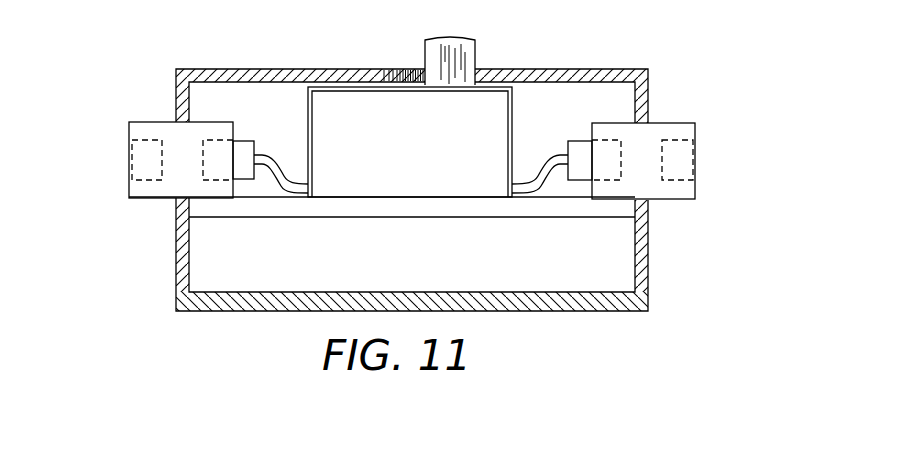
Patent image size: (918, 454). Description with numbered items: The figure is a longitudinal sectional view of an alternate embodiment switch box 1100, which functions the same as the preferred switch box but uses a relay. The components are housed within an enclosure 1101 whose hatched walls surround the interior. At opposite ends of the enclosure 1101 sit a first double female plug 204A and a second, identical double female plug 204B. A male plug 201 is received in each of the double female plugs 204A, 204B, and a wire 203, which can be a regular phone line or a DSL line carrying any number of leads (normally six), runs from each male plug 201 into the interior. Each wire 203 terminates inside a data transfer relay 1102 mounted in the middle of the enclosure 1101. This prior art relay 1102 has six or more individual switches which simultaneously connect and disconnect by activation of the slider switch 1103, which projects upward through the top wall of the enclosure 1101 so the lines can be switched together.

The switch box 1100 is at (385, 186).
The housing 1101 is at (590, 311).
The data transfer relay 1102 is at (450, 162).
The slider switch 1103 is at (440, 62).
The male plug 201 is at (243, 140).
The wire 203 is at (267, 180).
The first double female plug 204A is at (148, 122).
The second double female plug 204B is at (668, 200).